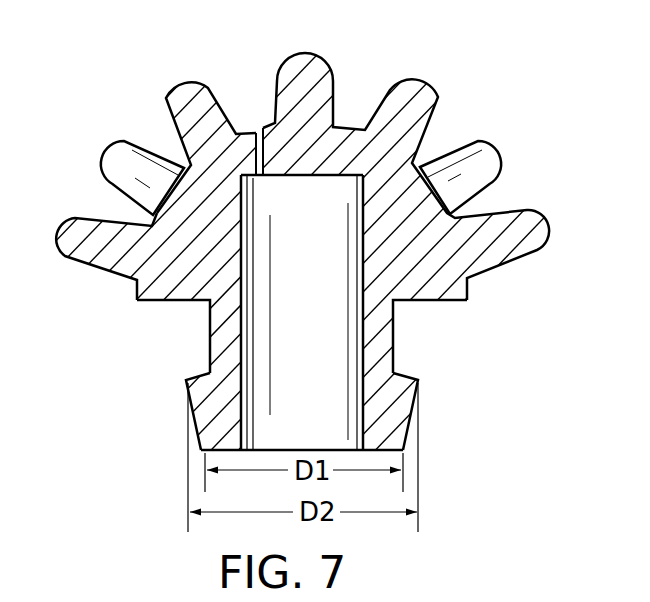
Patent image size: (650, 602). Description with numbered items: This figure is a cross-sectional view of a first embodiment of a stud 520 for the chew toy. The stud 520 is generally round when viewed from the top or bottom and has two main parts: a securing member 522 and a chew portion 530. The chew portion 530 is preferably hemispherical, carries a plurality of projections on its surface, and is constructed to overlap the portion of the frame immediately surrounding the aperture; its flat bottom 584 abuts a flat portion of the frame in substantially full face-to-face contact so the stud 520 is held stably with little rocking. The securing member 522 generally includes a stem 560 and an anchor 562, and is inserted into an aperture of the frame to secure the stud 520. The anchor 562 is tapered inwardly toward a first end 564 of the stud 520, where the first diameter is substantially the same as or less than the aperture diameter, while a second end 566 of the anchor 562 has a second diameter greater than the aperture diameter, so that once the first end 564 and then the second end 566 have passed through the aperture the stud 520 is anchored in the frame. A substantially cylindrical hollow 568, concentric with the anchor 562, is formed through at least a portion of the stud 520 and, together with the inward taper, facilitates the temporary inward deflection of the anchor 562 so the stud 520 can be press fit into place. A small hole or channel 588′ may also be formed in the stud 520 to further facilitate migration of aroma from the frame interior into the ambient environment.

The stud 520 is at (356, 105).
The chew portion 530 is at (423, 150).
The channel 588′ is at (255, 130).
The cylindrical hollow 568 is at (275, 210).
The flat bottom 584 is at (140, 302).
The stem 560 is at (210, 333).
The securing member 522 is at (395, 327).
The anchor 562 is at (201, 414).
The second end 566 is at (418, 381).
The first end 564 is at (405, 450).